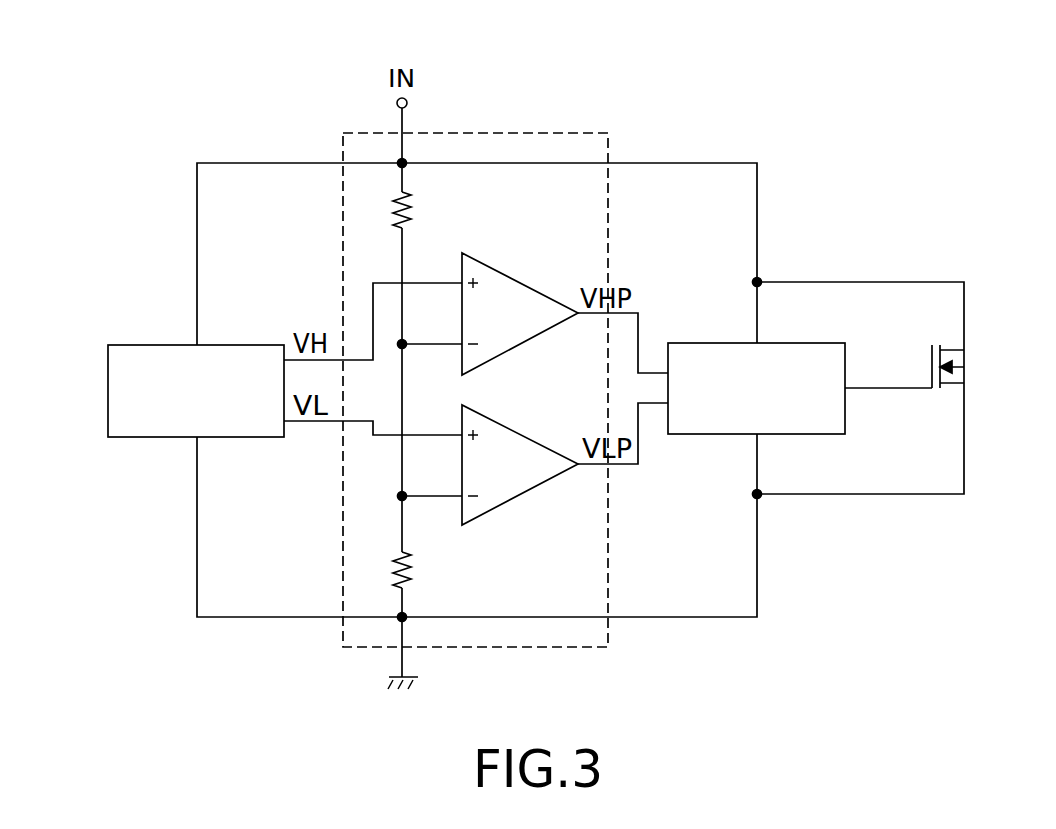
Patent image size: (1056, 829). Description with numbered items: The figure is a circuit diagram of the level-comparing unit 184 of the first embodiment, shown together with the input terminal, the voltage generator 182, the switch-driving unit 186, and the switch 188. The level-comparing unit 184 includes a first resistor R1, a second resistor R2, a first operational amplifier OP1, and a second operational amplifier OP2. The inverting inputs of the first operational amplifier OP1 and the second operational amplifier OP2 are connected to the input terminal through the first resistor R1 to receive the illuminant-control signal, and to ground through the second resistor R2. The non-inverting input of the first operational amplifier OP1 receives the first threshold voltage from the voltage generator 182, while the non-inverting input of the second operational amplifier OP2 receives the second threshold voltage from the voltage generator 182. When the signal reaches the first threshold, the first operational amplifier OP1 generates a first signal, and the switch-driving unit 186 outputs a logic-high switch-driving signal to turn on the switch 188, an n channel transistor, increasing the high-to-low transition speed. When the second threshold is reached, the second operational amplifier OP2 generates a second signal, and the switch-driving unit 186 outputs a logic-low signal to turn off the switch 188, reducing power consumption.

The voltage generator 182 is at (185, 352).
The level-comparing unit 184 is at (477, 138).
The switch-driving unit 186 is at (768, 350).
The switch 188 is at (963, 359).
The first resistor R1 is at (420, 210).
The second resistor R2 is at (420, 570).
The first operational amplifier OP1 is at (522, 280).
The second operational amplifier OP2 is at (522, 497).